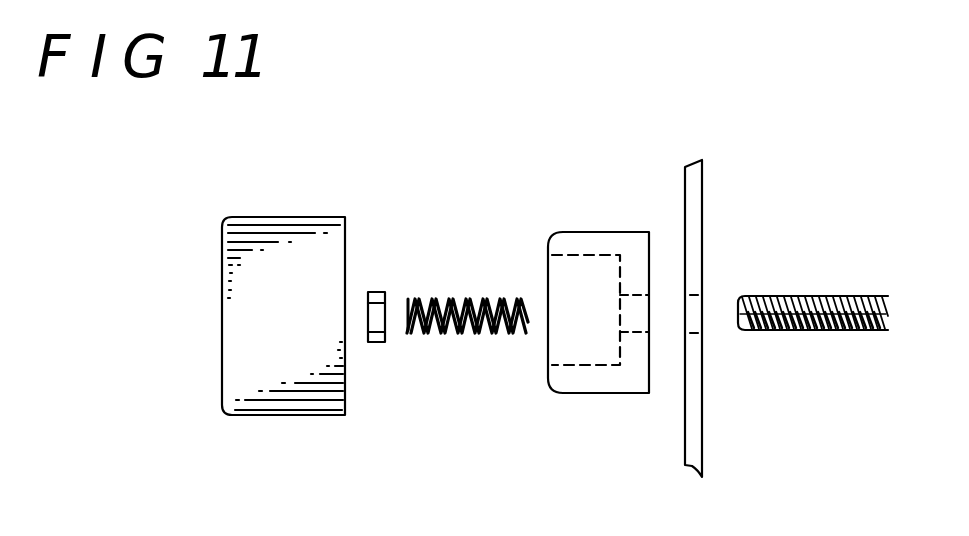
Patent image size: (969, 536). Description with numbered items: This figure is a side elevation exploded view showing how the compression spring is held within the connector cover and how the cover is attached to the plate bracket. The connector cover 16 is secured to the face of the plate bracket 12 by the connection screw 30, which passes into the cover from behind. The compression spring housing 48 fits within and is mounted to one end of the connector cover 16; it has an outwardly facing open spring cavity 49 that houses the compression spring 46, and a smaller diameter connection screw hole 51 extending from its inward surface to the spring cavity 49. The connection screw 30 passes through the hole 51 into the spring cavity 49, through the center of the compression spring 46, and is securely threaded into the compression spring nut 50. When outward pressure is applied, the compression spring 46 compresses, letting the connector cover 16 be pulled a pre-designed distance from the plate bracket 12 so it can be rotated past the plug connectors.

The connector cover 16 is at (245, 325).
The compression spring nut 50 is at (378, 280).
The compression spring 46 is at (468, 288).
The compression spring housing 48 is at (577, 245).
The spring cavity 49 is at (587, 338).
The connection screw hole 51 is at (640, 340).
The plate bracket 12 is at (705, 203).
The connection screw 30 is at (840, 292).